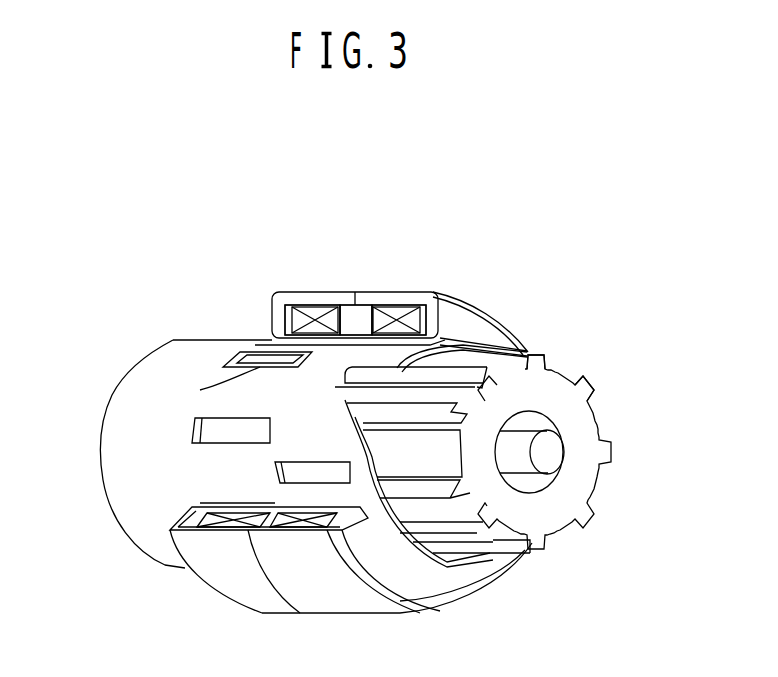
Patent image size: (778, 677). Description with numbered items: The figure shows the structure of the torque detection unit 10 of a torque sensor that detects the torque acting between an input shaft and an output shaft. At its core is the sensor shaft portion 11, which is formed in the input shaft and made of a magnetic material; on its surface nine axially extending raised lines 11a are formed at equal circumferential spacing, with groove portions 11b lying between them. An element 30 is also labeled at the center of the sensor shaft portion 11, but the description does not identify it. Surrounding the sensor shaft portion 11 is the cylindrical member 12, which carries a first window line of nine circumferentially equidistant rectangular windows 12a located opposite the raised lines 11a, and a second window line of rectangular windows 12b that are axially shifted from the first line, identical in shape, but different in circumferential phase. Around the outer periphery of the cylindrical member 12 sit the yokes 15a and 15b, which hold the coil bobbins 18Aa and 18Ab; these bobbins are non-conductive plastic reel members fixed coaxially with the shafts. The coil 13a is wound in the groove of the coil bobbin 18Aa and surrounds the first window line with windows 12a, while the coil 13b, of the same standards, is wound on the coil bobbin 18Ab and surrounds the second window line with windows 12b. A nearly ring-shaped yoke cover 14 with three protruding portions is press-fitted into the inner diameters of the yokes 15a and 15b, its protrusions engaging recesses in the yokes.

The torque detection unit 10 is at (618, 230).
The sensor shaft portion 11 is at (570, 480).
The raised lines 11a is at (537, 352).
The groove portions 11b is at (560, 372).
The cylindrical member 12 is at (175, 352).
The rectangular windows 12a is at (227, 413).
The rectangular windows 12b is at (320, 462).
The coil 13a is at (310, 297).
The coil 13b is at (397, 300).
The yoke cover 14 is at (372, 292).
The yoke 15a is at (342, 293).
The yoke 15b is at (420, 297).
The coil bobbin 18Aa is at (283, 322).
The coil bobbin 18Ab is at (442, 318).
The shaft 30 is at (550, 450).